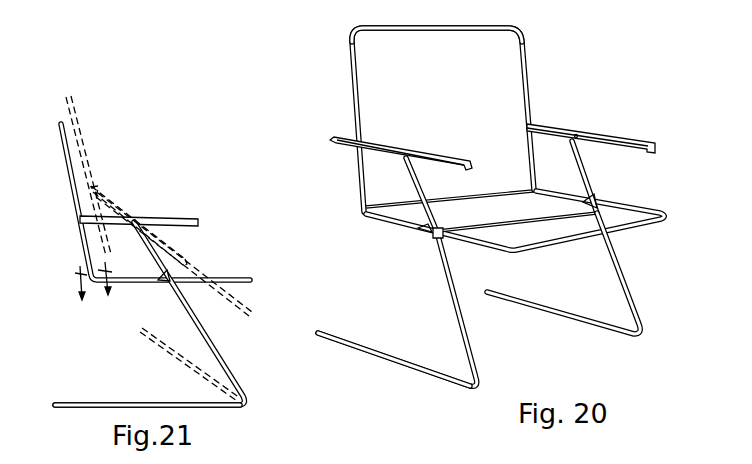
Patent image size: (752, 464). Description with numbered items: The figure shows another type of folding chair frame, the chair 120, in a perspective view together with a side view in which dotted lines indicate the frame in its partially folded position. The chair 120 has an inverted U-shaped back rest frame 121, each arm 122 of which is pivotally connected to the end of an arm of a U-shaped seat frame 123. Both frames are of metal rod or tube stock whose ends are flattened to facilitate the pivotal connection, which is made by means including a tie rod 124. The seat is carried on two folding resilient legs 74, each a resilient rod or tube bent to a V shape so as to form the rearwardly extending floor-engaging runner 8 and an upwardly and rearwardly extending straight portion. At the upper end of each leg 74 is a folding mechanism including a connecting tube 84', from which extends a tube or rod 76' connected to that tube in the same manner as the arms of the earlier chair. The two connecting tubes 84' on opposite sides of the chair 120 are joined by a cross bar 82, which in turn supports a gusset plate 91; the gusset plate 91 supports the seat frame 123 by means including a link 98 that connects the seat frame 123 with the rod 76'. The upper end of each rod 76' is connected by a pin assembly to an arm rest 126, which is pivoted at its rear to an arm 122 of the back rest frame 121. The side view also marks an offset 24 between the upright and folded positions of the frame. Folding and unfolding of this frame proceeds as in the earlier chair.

In FIG. 20, the floor-engaging runner 8 is at (407, 368).
In FIG. 21, the floor-engaging runner 8 is at (113, 403).
In FIG. 21, the offset distance 24 is at (89, 275).
In FIG. 20, the V-shaped leg 74 is at (479, 263).
In FIG. 20, the rod 76' is at (513, 186).
In FIG. 20, the cross bar 82 is at (538, 224).
In FIG. 20, the connecting tube 84' is at (424, 245).
In FIG. 20, the gusset plate 91 is at (422, 232).
In FIG. 20, the link 98 is at (583, 188).
In FIG. 20, the chair 120 is at (479, 197).
In FIG. 20, the back rest frame 121 is at (441, 27).
In FIG. 20, the arm 122 is at (357, 96).
In FIG. 20, the seat frame 123 is at (653, 217).
In FIG. 20, the tie rod 124 is at (477, 198).
In FIG. 20, the arm rest 126 is at (395, 147).